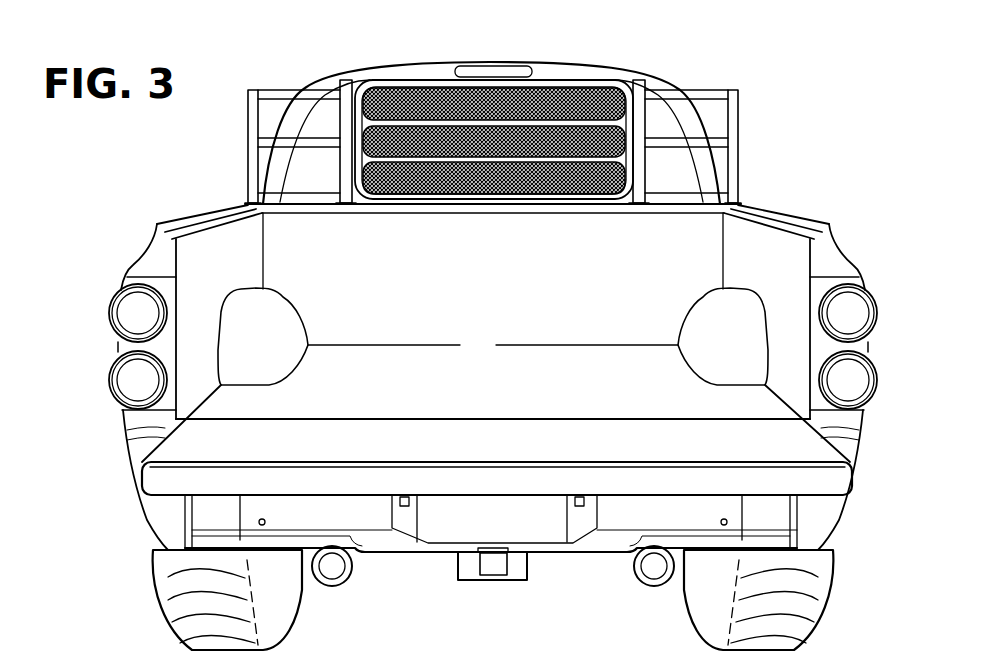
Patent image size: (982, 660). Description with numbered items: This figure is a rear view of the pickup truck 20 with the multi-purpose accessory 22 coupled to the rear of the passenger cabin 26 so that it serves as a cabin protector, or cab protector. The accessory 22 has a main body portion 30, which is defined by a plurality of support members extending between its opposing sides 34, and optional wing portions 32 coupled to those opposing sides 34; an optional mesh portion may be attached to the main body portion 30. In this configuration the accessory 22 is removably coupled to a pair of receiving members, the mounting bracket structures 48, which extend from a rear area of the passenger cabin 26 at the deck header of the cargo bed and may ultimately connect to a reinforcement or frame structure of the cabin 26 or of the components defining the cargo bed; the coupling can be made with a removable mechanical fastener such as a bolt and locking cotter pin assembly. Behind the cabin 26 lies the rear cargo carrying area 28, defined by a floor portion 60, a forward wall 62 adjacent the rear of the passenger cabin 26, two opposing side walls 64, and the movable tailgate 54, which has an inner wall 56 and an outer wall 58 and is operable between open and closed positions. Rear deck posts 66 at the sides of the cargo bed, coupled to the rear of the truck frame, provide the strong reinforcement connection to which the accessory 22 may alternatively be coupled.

The pickup truck 20 is at (841, 92).
The multi-purpose accessory 22 is at (493, 111).
The passenger cabin 26 is at (610, 72).
The rear cargo carrying area 28 is at (492, 361).
The main body portion 30 is at (543, 78).
The wing portions 32 is at (247, 130).
The opposing sides 34 is at (346, 80).
The mounting bracket structures 48 is at (357, 204).
The tailgate 54 is at (795, 476).
The inner wall 56 is at (779, 438).
The outer wall 58 is at (765, 552).
The floor portion 60 is at (337, 392).
The forward wall 62 is at (335, 277).
The side walls 64 is at (205, 213).
The rear deck posts 66 is at (147, 272).